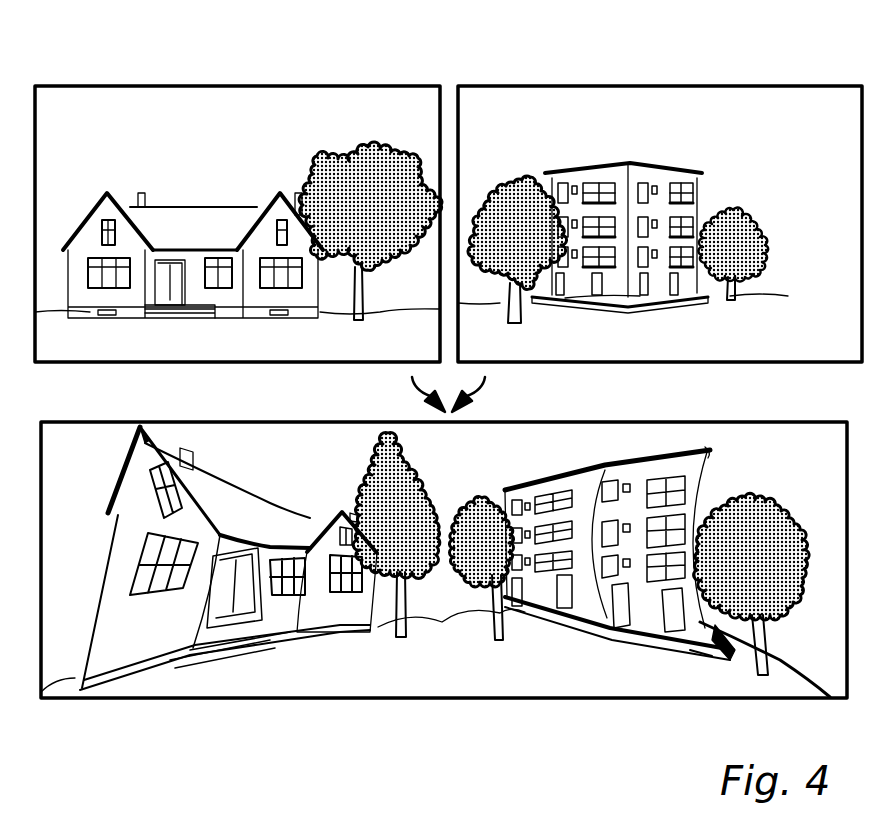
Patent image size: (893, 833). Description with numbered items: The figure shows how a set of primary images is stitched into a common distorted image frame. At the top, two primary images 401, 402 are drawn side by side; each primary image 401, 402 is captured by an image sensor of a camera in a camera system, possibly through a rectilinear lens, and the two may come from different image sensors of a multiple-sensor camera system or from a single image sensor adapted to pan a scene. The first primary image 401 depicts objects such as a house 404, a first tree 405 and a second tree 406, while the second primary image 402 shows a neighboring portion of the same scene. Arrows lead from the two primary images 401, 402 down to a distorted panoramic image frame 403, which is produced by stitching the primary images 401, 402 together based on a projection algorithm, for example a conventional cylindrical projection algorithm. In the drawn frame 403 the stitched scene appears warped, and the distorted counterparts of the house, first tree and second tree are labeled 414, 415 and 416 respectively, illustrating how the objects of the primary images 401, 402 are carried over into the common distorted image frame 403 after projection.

The primary image 401 is at (313, 85).
The primary image 402 is at (728, 84).
The distorted panoramic image frame 403 is at (158, 700).
The house 404 is at (220, 216).
The first tree 405 is at (358, 153).
The second tree 406 is at (518, 183).
The distorted house 414 is at (275, 615).
The distorted tree 415 is at (423, 563).
The distorted tree 416 is at (470, 567).